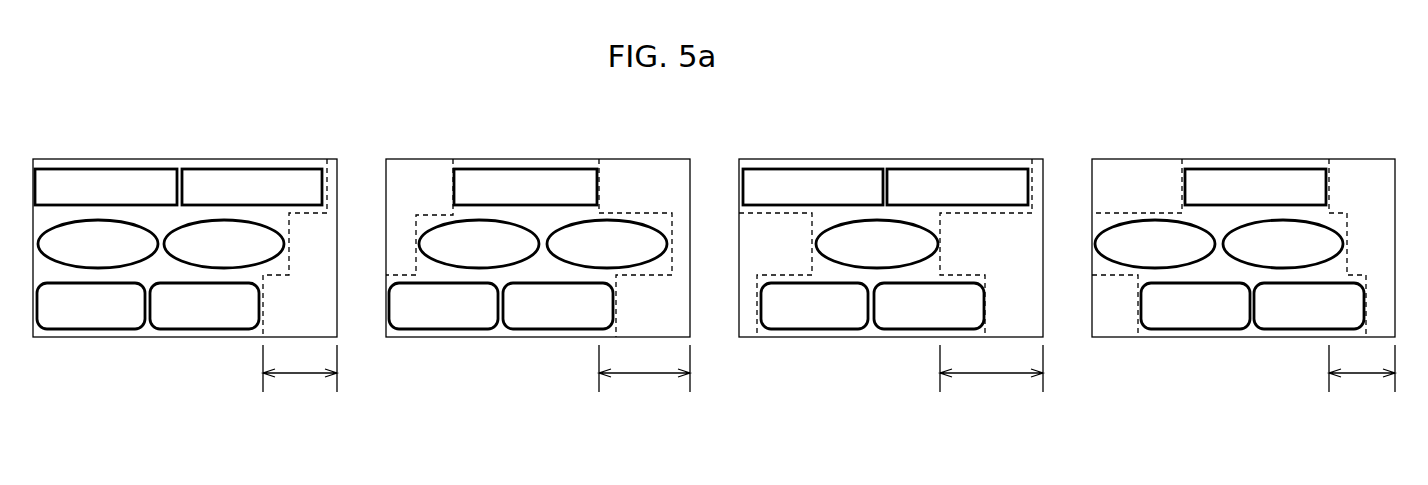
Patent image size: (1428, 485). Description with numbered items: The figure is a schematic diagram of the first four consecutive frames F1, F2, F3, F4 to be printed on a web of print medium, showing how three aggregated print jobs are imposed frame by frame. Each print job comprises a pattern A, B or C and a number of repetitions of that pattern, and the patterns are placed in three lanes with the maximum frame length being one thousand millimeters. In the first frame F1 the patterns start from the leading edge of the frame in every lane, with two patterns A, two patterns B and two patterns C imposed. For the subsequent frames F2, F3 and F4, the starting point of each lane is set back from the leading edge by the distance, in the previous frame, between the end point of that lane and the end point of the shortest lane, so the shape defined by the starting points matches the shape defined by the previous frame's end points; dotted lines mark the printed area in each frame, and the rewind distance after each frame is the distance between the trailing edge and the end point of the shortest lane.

The pattern A is at (680, 187).
The pattern B is at (690, 244).
The pattern C is at (700, 306).
The first frame F1 is at (185, 273).
The second frame F2 is at (538, 276).
The third frame F3 is at (891, 274).
The fourth frame F4 is at (1248, 275).